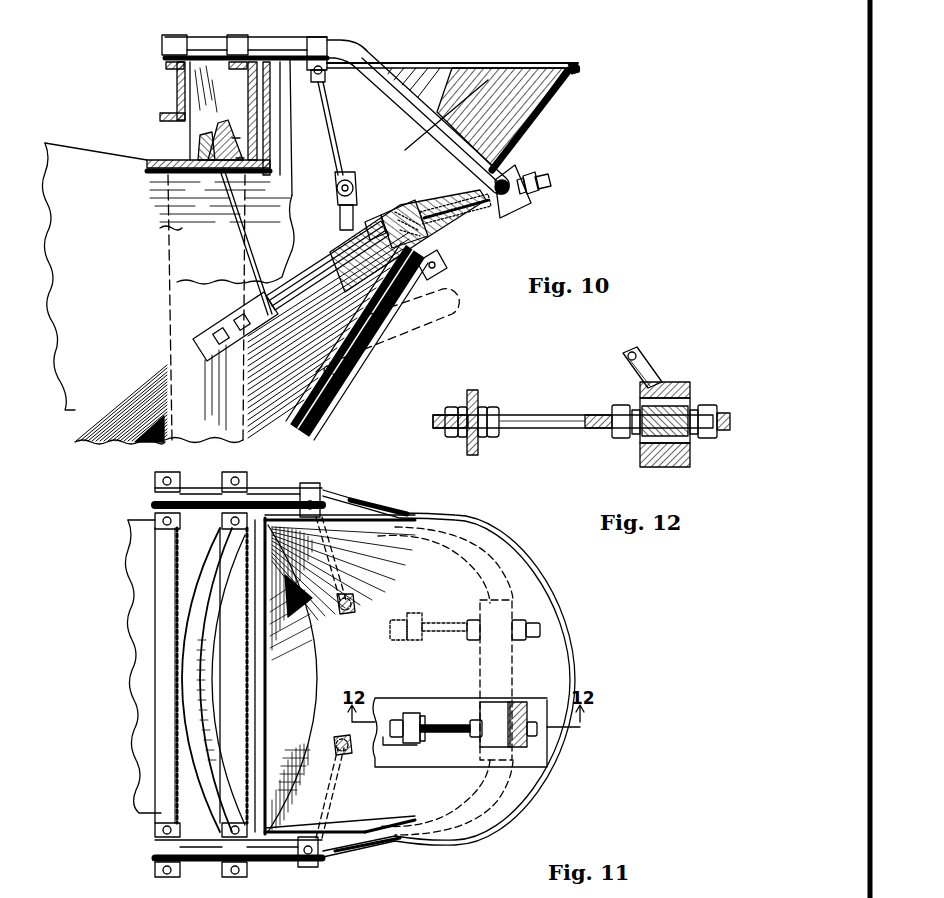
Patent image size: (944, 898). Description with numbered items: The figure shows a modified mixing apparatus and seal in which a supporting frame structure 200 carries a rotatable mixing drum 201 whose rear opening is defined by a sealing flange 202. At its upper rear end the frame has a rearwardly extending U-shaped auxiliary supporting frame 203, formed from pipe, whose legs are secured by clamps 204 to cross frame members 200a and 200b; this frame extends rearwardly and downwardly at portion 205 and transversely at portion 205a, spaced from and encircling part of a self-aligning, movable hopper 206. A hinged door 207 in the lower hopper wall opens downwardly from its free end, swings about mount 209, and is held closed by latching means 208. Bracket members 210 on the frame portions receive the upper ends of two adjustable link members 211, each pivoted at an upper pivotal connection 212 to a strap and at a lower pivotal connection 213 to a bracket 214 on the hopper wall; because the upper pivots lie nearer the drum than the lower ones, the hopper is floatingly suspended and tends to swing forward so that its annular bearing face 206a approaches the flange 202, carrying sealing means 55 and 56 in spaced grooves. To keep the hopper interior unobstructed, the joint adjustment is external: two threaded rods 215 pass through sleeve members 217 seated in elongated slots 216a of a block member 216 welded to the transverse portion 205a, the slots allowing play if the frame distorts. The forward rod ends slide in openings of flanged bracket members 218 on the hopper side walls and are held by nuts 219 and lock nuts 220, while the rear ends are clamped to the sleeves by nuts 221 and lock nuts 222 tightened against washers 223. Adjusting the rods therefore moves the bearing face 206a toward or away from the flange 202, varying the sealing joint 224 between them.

In FIG. 10, the sealing means 55 is at (232, 138).
In FIG. 10, the sealing means 56 is at (236, 158).
In FIG. 10, the supporting frame structure 200 is at (211, 401).
In FIG. 10, the cross frame member 200a is at (178, 85).
In FIG. 11, the cross frame member 200a is at (165, 638).
In FIG. 10, the cross frame member 200b is at (252, 90).
In FIG. 11, the cross frame member 200b is at (222, 552).
In FIG. 10, the mixing drum 201 is at (102, 209).
In FIG. 11, the mixing drum 201 is at (156, 722).
In FIG. 10, the sealing flange 202 is at (198, 145).
In FIG. 10, the auxiliary supporting frame 203 is at (270, 50).
In FIG. 11, the auxiliary supporting frame 203 is at (268, 488).
In FIG. 10, the clamps 204 is at (178, 37).
In FIG. 11, the clamps 204 is at (234, 488).
In FIG. 10, the rearwardly and downwardly extending portion 205 is at (392, 112).
In FIG. 12, the rearwardly and downwardly extending portion 205 is at (636, 350).
In FIG. 11, the rearwardly and downwardly extending portion 205 is at (472, 538).
In FIG. 11, the transversely extending portion 205a is at (512, 598).
In FIG. 10, the hopper 206 is at (466, 93).
In FIG. 11, the hopper 206 is at (445, 672).
In FIG. 10, the annular bearing face 206a is at (222, 123).
In FIG. 10, the hinged door 207 is at (377, 313).
In FIG. 10, the latching means 208 is at (430, 266).
In FIG. 10, the swinging mount 209 is at (331, 375).
In FIG. 10, the bracket members 210 is at (322, 45).
In FIG. 11, the bracket members 210 is at (318, 495).
In FIG. 10, the adjustable link members 211 is at (336, 132).
In FIG. 11, the adjustable link members 211 is at (360, 582).
In FIG. 10, the upper pivotal connection 212 is at (323, 73).
In FIG. 11, the upper pivotal connection 212 is at (340, 500).
In FIG. 10, the lower pivotal connection 213 is at (337, 189).
In FIG. 11, the lower pivotal connection 213 is at (345, 610).
In FIG. 10, the bracket 214 is at (337, 208).
In FIG. 11, the bracket 214 is at (355, 601).
In FIG. 10, the threaded rods 215 is at (478, 212).
In FIG. 12, the threaded rods 215 is at (548, 415).
In FIG. 11, the threaded rods 215 is at (449, 622).
In FIG. 10, the block member 216 is at (515, 210).
In FIG. 12, the block member 216 is at (675, 467).
In FIG. 11, the block member 216 is at (518, 680).
In FIG. 12, the elongated slots 216a is at (660, 382).
In FIG. 11, the elongated slots 216a is at (502, 725).
In FIG. 12, the sleeve members 217 is at (683, 400).
In FIG. 10, the bracket members 218 is at (397, 210).
In FIG. 12, the bracket members 218 is at (472, 455).
In FIG. 11, the bracket members 218 is at (412, 613).
In FIG. 12, the nuts 219 is at (463, 408).
In FIG. 11, the nuts 219 is at (416, 716).
In FIG. 12, the lock nuts 220 is at (450, 412).
In FIG. 11, the lock nuts 220 is at (418, 636).
In FIG. 10, the nuts 221 is at (532, 194).
In FIG. 12, the nuts 221 is at (622, 405).
In FIG. 10, the lock nuts 222 is at (550, 184).
In FIG. 12, the lock nuts 222 is at (719, 413).
In FIG. 11, the lock nuts 222 is at (470, 722).
In FIG. 10, the washers 223 is at (516, 176).
In FIG. 12, the washers 223 is at (633, 438).
In FIG. 10, the joint 224 is at (300, 428).